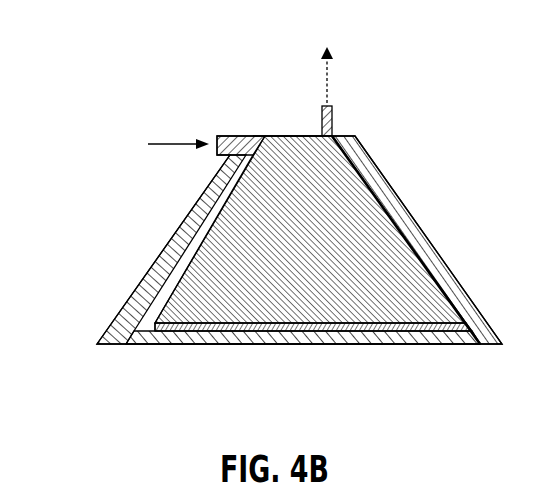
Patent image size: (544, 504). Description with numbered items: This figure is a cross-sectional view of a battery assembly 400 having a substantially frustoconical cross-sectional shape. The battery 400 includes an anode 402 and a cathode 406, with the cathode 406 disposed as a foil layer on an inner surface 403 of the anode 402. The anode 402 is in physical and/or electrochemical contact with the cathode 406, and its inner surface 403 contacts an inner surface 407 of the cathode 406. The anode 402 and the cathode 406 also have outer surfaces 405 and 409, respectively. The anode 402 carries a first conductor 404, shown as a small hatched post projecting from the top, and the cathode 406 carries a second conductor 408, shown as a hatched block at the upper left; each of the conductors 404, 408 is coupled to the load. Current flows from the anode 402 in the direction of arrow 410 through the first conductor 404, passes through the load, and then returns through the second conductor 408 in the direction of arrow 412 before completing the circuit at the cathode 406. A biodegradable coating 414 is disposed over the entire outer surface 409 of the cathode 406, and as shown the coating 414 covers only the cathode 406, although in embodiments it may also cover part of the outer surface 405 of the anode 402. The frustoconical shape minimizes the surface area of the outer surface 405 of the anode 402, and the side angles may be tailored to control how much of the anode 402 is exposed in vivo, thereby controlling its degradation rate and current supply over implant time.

The battery assembly 400 is at (113, 56).
The anode 402 is at (342, 193).
The inner surface of the anode 403 is at (415, 332).
The first conductor 404 is at (333, 120).
The outer surface of the anode 405 is at (302, 136).
The cathode 406 is at (355, 331).
The inner surface of the cathode 407 is at (157, 273).
The second conductor 408 is at (230, 144).
The outer surface of the cathode 409 is at (252, 344).
The arrow indicating current direction from anode 410 is at (328, 72).
The arrow indicating current direction to cathode 412 is at (175, 143).
The biodegradable coating 414 is at (150, 344).